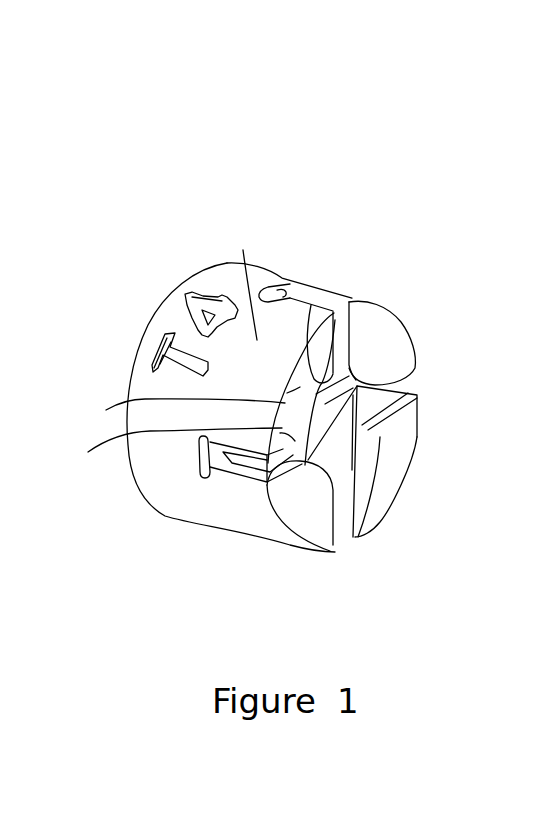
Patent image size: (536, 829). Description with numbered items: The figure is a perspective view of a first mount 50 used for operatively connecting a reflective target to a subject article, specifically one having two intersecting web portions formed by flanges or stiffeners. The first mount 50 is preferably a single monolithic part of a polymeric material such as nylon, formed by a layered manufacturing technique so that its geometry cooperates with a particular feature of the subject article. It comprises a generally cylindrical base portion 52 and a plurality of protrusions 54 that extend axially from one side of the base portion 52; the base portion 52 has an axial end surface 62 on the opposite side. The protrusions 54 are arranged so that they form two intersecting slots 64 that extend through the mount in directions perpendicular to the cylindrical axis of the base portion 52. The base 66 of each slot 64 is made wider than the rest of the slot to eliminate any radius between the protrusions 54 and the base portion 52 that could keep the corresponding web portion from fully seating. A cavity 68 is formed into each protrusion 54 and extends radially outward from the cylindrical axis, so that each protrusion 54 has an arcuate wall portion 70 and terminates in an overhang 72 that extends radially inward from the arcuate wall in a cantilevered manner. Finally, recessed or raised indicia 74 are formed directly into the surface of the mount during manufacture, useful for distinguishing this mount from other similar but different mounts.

The first mount 50 is at (250, 178).
The base portion 52 is at (143, 463).
The protrusions 54 is at (380, 318).
The axial end surface 62 is at (150, 318).
The slots 64 is at (404, 380).
The base of slot 66 is at (285, 283).
The cavity 68 is at (329, 370).
The arcuate wall portion 70 is at (243, 250).
The overhang 72 is at (433, 300).
The indicia 74 is at (187, 292).